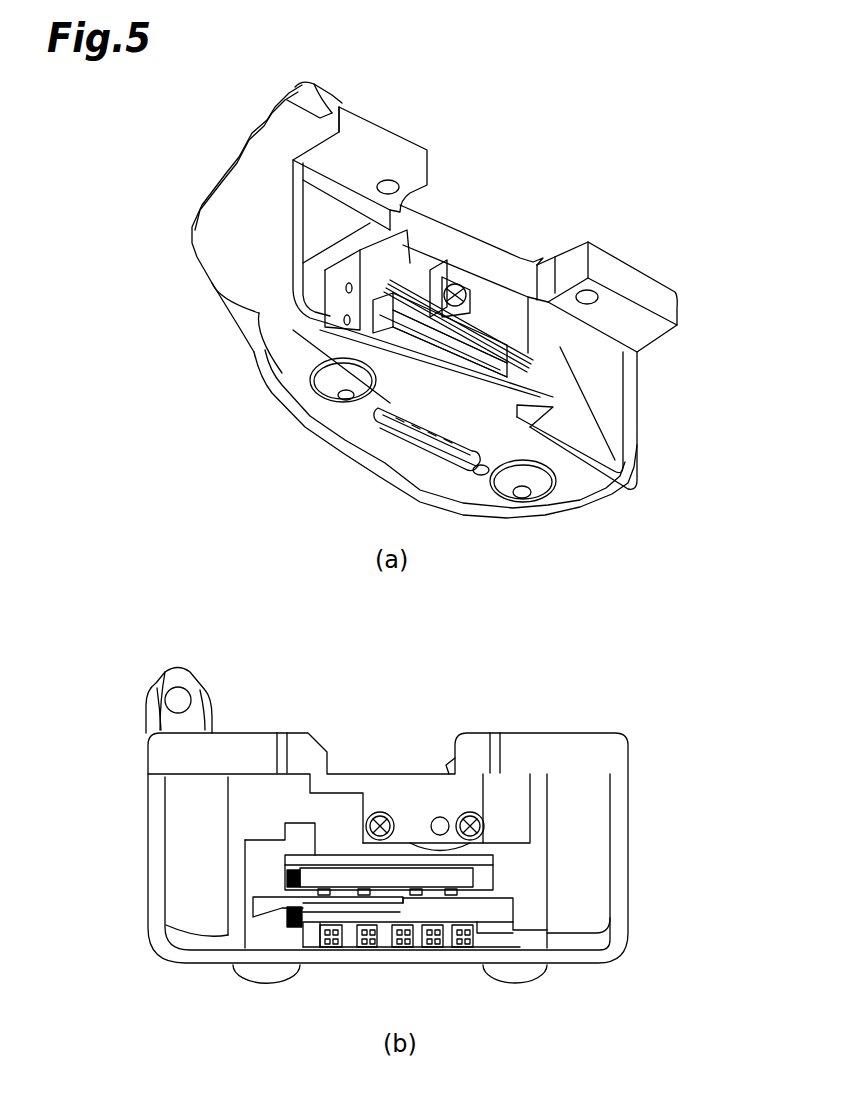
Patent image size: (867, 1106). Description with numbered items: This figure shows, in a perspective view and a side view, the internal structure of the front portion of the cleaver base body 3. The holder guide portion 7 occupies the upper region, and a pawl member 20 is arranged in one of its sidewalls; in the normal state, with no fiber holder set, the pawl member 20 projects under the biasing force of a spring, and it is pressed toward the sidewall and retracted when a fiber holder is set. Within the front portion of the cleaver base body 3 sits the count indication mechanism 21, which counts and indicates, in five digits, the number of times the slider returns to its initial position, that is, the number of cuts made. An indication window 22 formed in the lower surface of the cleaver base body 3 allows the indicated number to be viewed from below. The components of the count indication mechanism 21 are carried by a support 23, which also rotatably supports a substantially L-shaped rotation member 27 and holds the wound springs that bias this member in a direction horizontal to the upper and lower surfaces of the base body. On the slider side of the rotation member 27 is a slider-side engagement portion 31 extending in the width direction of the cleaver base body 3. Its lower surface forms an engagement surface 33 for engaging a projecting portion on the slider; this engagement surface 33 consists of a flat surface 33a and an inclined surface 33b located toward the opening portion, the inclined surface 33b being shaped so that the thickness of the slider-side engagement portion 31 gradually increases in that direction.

The cleaver base body 3 is at (216, 220).
The holder guide portion 7 is at (480, 262).
The pawl member 20 is at (458, 752).
The count indication mechanism 21 is at (478, 475).
The indication window 22 is at (400, 440).
The support 23 is at (330, 303).
The rotation member 27 is at (553, 407).
The slider-side engagement portion 31 is at (400, 305).
The engagement surface 33 is at (222, 452).
The flat surface 33a is at (447, 340).
The inclined surface 33b is at (397, 313).